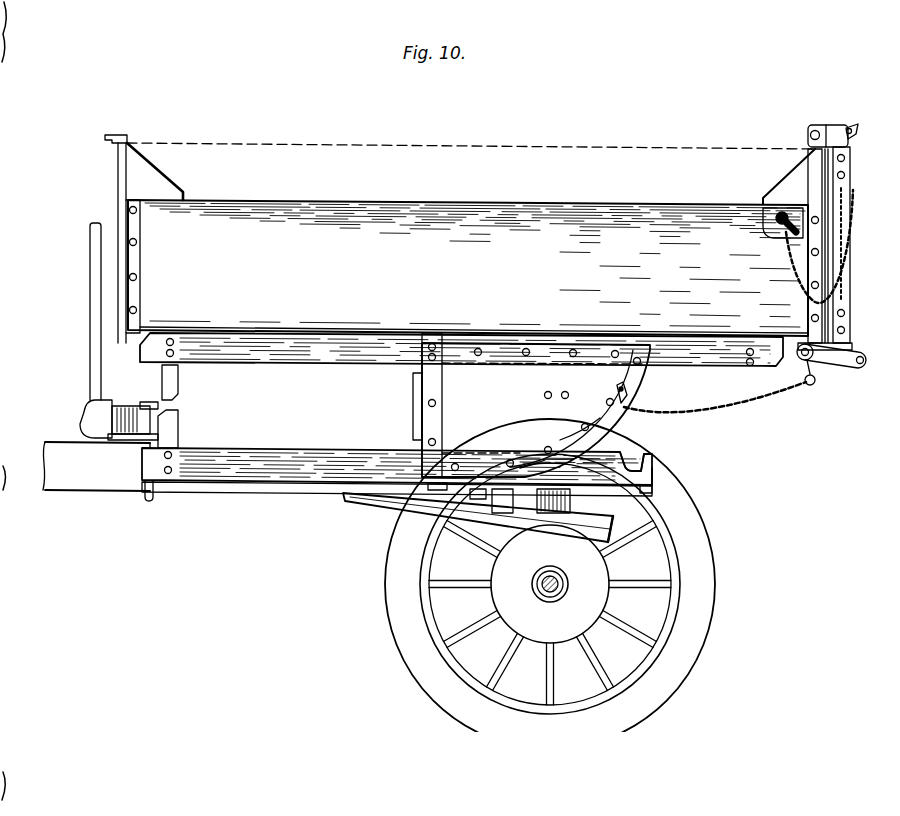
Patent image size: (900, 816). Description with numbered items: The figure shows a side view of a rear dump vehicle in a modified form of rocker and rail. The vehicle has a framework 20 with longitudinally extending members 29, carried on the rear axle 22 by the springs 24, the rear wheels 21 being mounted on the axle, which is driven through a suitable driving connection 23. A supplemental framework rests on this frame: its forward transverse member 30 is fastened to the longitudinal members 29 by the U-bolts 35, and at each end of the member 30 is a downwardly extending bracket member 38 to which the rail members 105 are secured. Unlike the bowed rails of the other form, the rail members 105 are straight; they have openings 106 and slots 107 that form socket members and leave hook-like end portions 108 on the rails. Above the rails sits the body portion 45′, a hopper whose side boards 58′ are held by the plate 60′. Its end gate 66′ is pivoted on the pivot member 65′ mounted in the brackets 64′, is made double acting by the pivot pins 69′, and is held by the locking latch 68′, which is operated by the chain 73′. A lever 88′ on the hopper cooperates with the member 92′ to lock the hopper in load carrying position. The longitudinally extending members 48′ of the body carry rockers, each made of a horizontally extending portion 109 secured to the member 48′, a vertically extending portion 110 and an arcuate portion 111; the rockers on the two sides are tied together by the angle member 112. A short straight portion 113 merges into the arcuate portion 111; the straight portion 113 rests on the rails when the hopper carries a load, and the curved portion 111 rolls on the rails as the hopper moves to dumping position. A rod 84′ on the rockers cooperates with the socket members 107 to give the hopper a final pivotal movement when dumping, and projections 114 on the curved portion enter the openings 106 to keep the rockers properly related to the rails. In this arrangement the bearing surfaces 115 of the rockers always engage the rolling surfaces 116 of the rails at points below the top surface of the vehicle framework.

The framework 20 is at (80, 478).
The rear wheels 21 is at (708, 547).
The rear axle 22 is at (560, 598).
The driving connection 23 is at (595, 531).
The springs 24 is at (553, 507).
The longitudinally extending members 29 is at (290, 495).
The forward transverse member 30 is at (164, 405).
The U-bolts 35 is at (148, 500).
The bracket member 38 is at (178, 428).
The body portion 45′ is at (455, 212).
The longitudinally extending members 48′ is at (330, 365).
The side boards 58′ is at (608, 152).
The plate 60′ is at (165, 181).
The brackets 64′ is at (816, 126).
The pivot member 65′ is at (852, 127).
The end gate 66′ is at (848, 224).
The locking latch 68′ is at (840, 366).
The pivot pins 69′ is at (850, 342).
The chain 73′ is at (768, 408).
The rod 84′ is at (632, 392).
The lever 88′ is at (90, 291).
The member 92′ is at (88, 404).
The rail members 105 is at (262, 472).
The openings 106 is at (590, 474).
The slots 107 is at (645, 452).
The hook-like end portions 108 is at (655, 468).
The horizontally extending portions 109 is at (512, 345).
The vertically extending portion 110 is at (422, 386).
The arcuate portion 111 is at (558, 438).
The angle member 112 is at (413, 410).
The short straight portion 113 is at (415, 495).
The projections 114 is at (545, 464).
The bearing surfaces 115 is at (557, 399).
The rolling surfaces 116 is at (655, 489).